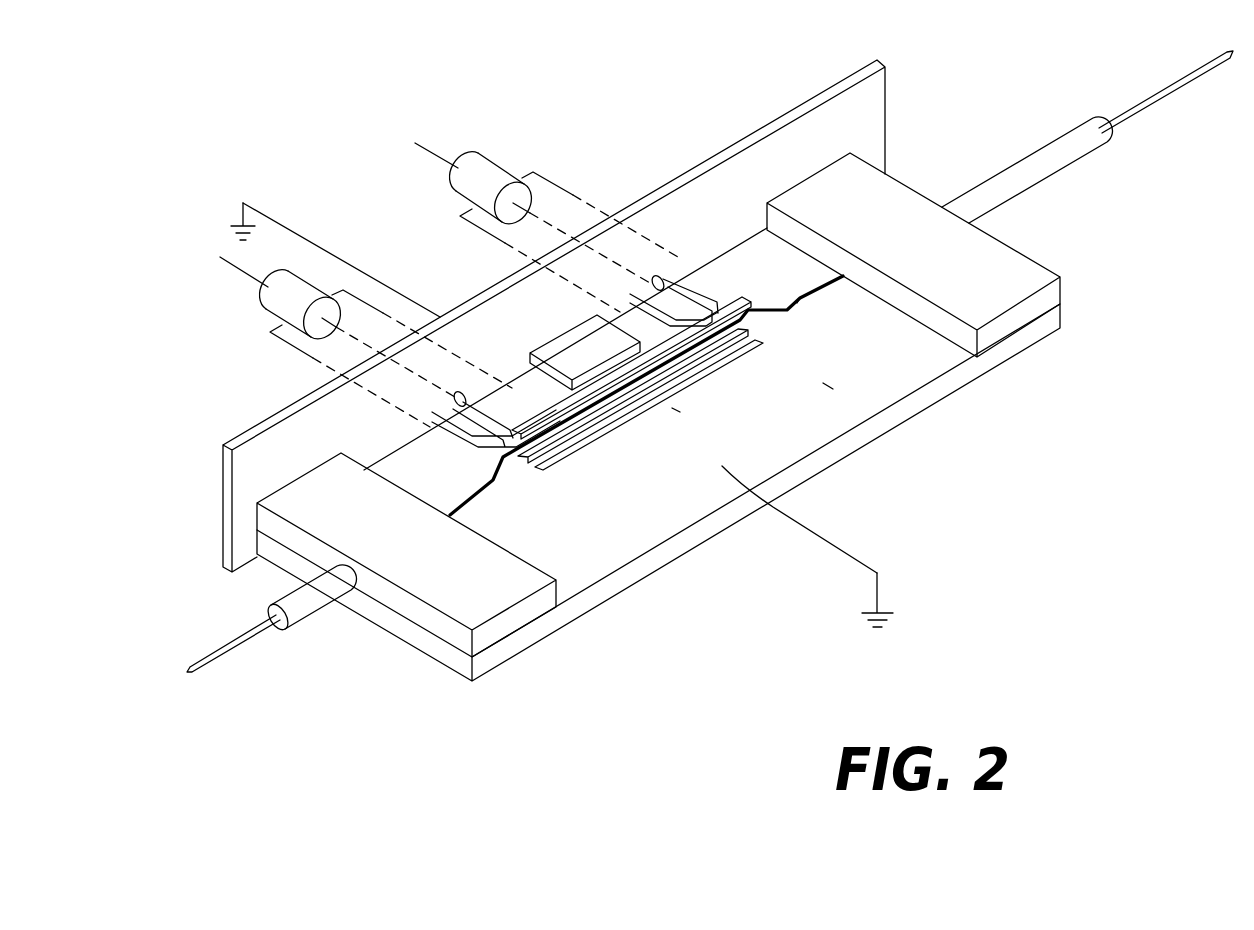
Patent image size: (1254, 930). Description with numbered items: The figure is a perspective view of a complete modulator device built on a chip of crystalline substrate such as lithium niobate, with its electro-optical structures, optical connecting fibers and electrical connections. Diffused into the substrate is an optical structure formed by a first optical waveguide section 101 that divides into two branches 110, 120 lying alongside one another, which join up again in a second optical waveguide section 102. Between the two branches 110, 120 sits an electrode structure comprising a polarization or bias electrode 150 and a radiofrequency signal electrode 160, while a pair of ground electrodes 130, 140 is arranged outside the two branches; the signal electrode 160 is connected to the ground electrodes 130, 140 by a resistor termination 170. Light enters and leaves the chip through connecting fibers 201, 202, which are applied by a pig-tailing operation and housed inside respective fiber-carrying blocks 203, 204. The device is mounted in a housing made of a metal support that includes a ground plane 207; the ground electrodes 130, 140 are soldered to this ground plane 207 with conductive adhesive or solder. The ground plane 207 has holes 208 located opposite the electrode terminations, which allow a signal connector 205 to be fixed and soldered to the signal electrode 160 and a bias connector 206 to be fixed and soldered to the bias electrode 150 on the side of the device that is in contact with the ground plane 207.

The first optical waveguide section 101 is at (600, 583).
The second optical waveguide section 102 is at (797, 303).
The branch 110 is at (567, 433).
The branch 120 is at (620, 435).
The ground electrode 130 is at (823, 383).
The ground electrode 140 is at (509, 364).
The bias electrode 150 is at (720, 368).
The signal electrode 160 is at (672, 408).
The resistor termination 170 is at (583, 331).
The connecting fiber 201 is at (217, 657).
The connecting fiber 202 is at (1142, 100).
The fiber-carrying block 203 is at (297, 608).
The fiber-carrying block 204 is at (1040, 168).
The signal connector 205 is at (272, 302).
The bias connector 206 is at (487, 163).
The ground plane 207 is at (266, 450).
The holes 208 is at (457, 393).